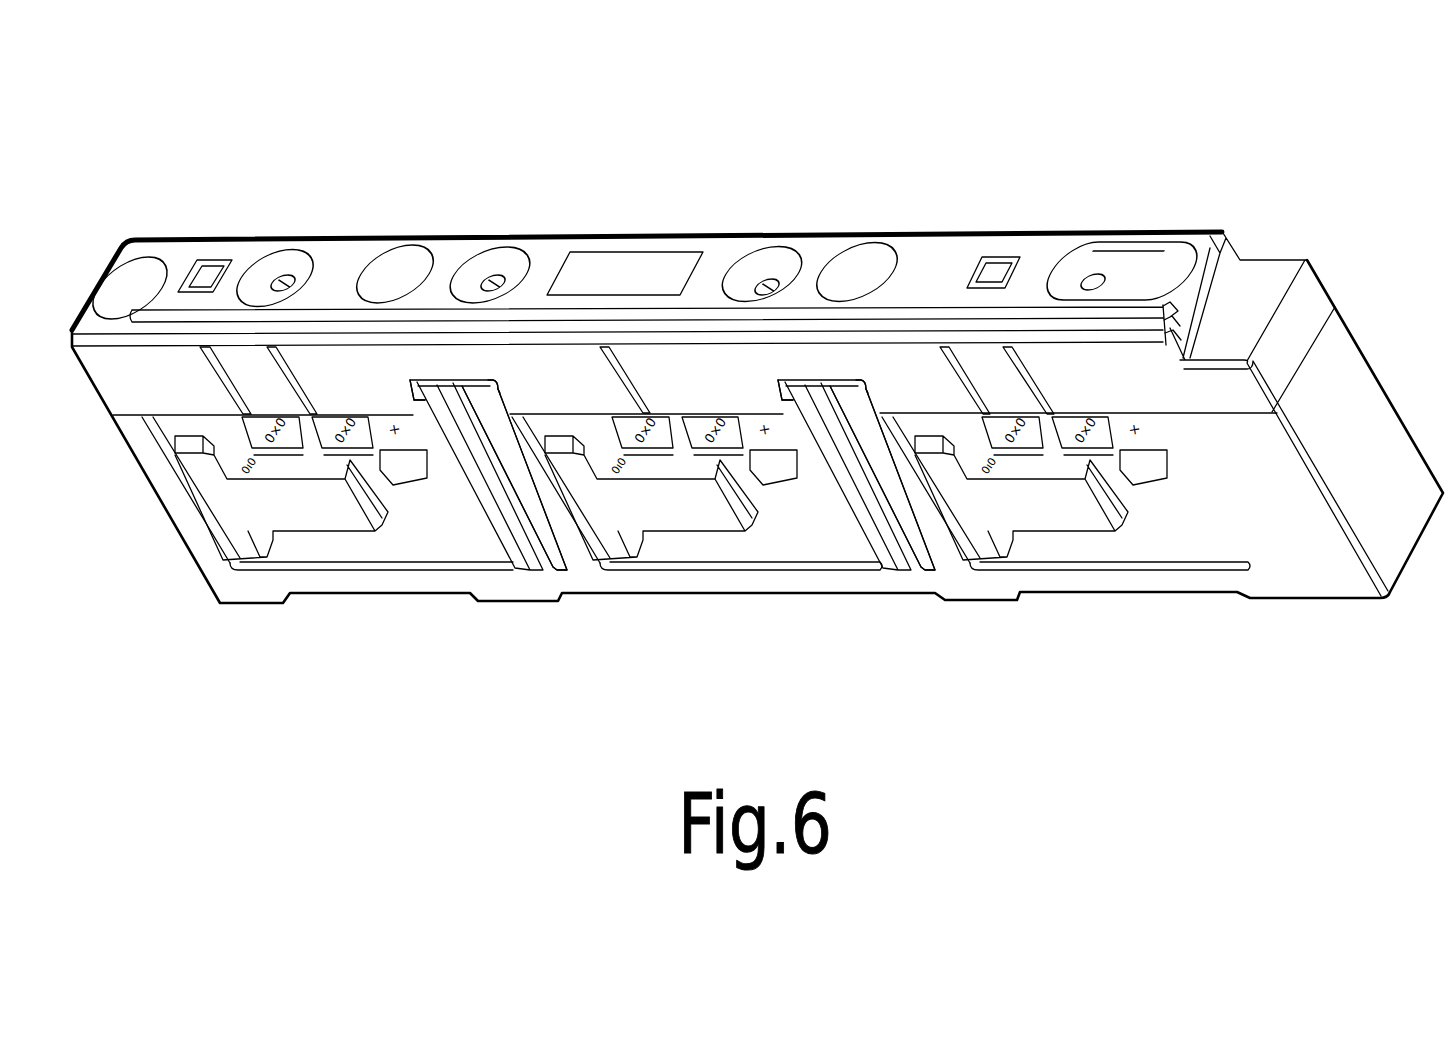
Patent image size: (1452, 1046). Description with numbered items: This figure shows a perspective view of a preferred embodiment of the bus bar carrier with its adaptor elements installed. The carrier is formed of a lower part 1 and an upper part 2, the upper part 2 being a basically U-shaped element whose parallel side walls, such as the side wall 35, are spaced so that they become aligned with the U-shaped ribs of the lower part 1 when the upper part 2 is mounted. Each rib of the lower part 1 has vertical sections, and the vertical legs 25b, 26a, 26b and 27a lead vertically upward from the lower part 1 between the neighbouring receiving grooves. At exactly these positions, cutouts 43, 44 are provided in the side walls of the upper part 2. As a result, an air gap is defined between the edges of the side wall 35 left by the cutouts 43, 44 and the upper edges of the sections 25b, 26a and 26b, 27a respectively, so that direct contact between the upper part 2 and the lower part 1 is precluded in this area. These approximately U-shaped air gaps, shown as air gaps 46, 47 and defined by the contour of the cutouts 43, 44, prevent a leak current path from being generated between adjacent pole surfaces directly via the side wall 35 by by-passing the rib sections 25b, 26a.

The lower part 1 is at (1198, 643).
The upper part 2 is at (1190, 185).
The vertical section of rib 25b is at (505, 528).
The vertical section of rib 26a is at (553, 522).
The vertical section of rib 26b is at (878, 512).
The vertical section of rib 27a is at (913, 508).
The side wall 35 is at (577, 397).
The cutout 43 is at (436, 380).
The cutout 44 is at (792, 383).
The air gap 46 is at (496, 383).
The air gap 47 is at (868, 383).